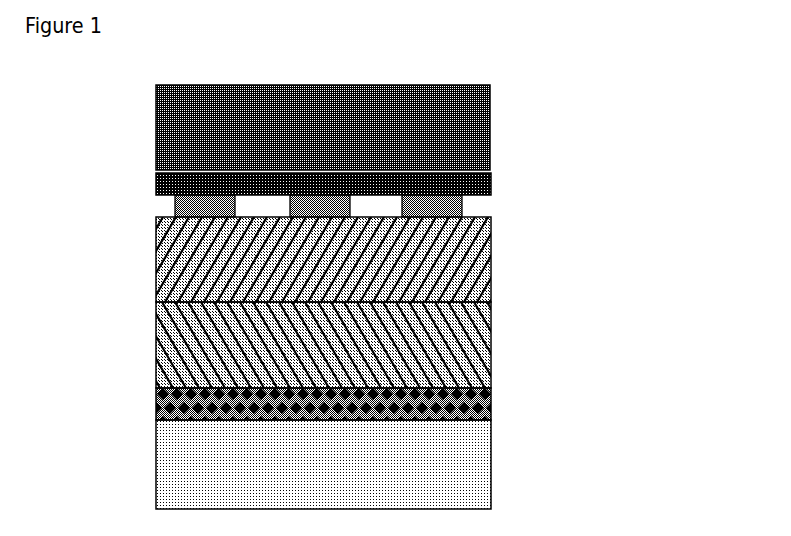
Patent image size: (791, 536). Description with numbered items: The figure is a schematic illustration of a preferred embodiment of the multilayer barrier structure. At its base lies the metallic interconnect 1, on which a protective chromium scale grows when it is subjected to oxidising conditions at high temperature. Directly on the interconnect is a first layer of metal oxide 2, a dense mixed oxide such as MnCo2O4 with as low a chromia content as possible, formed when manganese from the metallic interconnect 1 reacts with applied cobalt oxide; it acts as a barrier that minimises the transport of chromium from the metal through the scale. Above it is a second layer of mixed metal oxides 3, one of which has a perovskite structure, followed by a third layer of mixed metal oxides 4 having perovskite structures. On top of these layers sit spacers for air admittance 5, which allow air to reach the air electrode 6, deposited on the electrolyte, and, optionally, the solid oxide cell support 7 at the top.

The metallic interconnect 1 is at (491, 460).
The first layer of metal oxide 2 is at (491, 402).
The second layer of mixed metal oxides 3 is at (491, 336).
The third layer of mixed metal oxides 4 is at (491, 258).
The spacers for air admittance 5 is at (462, 213).
The air electrode 6 is at (492, 185).
The solid oxide cell support 7 is at (490, 108).